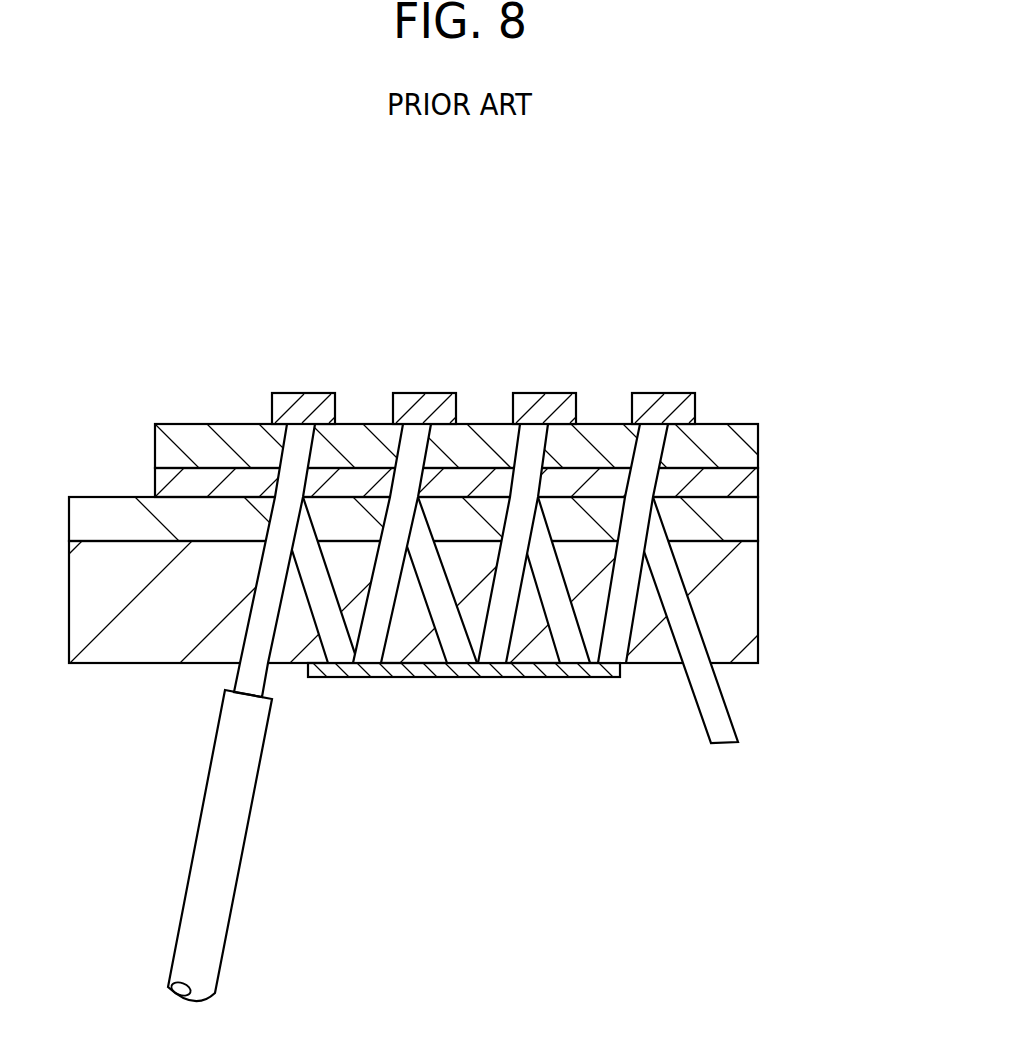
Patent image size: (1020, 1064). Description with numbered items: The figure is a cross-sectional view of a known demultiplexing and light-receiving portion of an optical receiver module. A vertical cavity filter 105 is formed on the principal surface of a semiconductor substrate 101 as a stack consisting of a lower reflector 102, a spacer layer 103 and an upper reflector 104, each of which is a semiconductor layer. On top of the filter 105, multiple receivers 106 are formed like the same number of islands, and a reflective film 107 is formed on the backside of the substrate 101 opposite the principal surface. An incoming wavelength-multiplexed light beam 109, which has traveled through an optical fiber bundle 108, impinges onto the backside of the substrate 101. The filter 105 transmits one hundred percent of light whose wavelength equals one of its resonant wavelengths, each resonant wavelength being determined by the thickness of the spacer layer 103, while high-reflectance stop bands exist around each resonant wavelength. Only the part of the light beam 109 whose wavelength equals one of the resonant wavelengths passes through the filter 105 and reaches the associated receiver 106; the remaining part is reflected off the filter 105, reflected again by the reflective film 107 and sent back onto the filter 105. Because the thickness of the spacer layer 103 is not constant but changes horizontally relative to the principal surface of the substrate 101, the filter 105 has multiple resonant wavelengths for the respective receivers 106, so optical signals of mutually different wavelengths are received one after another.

The semiconductor substrate 101 is at (759, 609).
The lower reflector 102 is at (759, 518).
The spacer layer 103 is at (759, 482).
The upper reflector 104 is at (759, 437).
The vertical cavity filter 105 is at (866, 415).
The receivers 106 is at (312, 392).
The reflective film 107 is at (550, 678).
The optical fiber bundle 108 is at (240, 867).
The wavelength-multiplexed light beam 109 is at (252, 617).